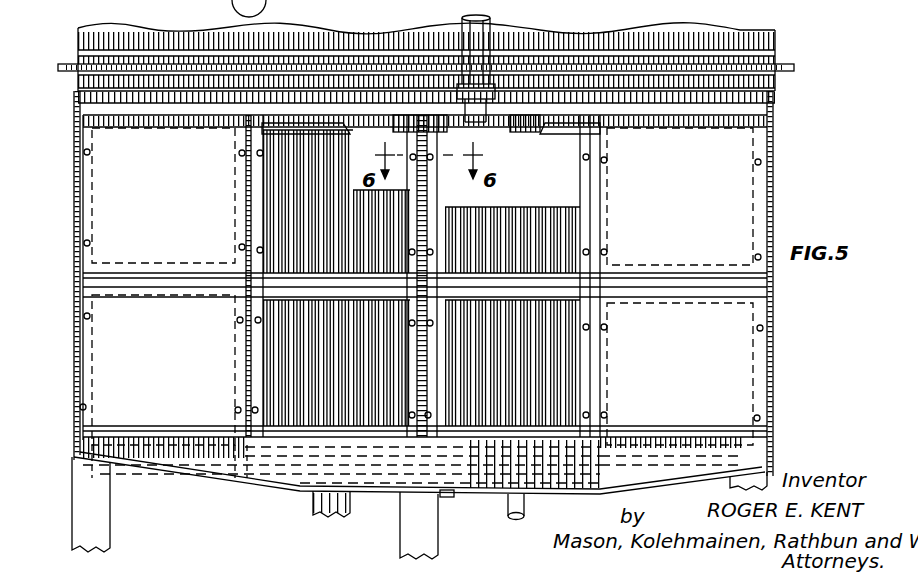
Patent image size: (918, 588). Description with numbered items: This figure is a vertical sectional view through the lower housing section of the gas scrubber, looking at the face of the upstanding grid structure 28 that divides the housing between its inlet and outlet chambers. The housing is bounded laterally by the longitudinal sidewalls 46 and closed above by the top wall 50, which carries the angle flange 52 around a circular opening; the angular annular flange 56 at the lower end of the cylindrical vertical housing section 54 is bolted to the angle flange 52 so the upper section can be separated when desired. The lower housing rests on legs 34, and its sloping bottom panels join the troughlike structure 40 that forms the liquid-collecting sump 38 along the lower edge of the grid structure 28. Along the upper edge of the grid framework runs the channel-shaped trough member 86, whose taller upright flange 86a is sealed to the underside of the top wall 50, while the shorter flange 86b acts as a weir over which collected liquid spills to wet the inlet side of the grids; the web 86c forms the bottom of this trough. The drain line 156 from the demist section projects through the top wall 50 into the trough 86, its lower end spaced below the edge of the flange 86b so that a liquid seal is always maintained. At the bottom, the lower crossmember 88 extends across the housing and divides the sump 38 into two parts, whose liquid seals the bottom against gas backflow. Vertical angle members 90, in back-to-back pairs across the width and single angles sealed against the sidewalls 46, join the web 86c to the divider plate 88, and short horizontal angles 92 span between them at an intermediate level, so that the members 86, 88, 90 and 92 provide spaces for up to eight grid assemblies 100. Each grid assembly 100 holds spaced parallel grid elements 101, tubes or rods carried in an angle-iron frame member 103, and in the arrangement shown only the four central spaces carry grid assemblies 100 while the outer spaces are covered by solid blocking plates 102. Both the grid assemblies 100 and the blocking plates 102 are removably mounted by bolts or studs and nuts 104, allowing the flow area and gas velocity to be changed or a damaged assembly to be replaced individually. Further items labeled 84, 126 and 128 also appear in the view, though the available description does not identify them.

The upstanding grid structure 28 is at (292, 492).
The legs 34 is at (98, 535).
The liquid-collecting sump 38 is at (180, 472).
The troughlike structure 40 is at (447, 498).
The longitudinal sidewalls 46 is at (77, 172).
The top wall 50 is at (187, 85).
The angle flange 52 is at (783, 75).
The cylindrical vertical housing section 54 is at (762, 35).
The angular annular flange 56 is at (777, 66).
The drive member 84 is at (233, 8).
The channel-shaped trough member 86 is at (468, 170).
The upright flange 86a is at (775, 106).
The flange 86b is at (775, 124).
The web 86c is at (485, 142).
The lower crossmember 88 is at (737, 447).
The vertical angle members 90 is at (81, 276).
The short horizontal angles 92 is at (168, 268).
The grid assemblies 100 is at (303, 110).
The grid elements 101 is at (323, 140).
The solid blocking plates 102 is at (186, 218).
The frame member 103 is at (250, 145).
The bolts or studs and nuts 104 is at (85, 153).
The outlet pipe 126 is at (318, 516).
The drain pipe 128 is at (500, 518).
The drain line 156 is at (485, 22).